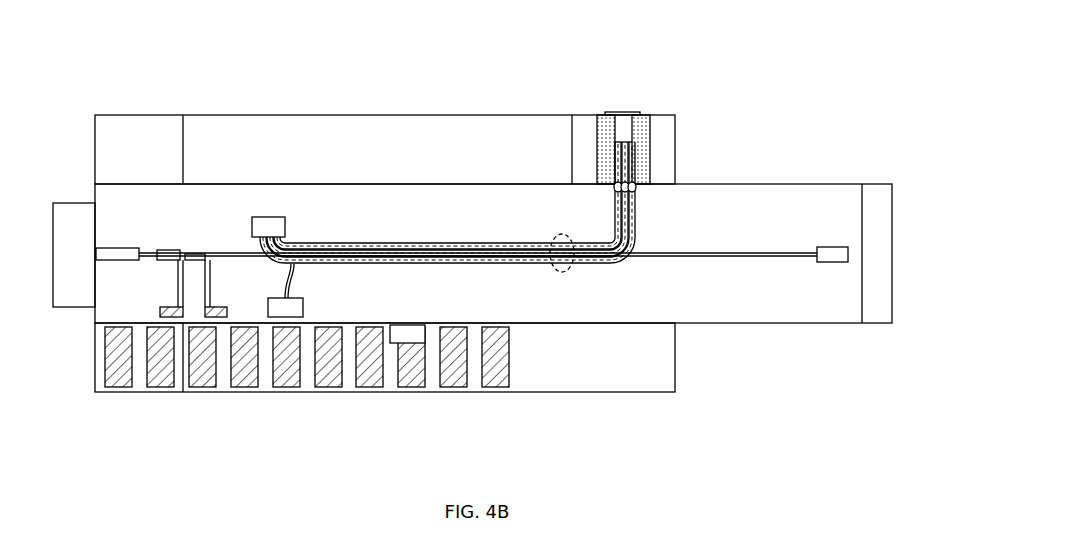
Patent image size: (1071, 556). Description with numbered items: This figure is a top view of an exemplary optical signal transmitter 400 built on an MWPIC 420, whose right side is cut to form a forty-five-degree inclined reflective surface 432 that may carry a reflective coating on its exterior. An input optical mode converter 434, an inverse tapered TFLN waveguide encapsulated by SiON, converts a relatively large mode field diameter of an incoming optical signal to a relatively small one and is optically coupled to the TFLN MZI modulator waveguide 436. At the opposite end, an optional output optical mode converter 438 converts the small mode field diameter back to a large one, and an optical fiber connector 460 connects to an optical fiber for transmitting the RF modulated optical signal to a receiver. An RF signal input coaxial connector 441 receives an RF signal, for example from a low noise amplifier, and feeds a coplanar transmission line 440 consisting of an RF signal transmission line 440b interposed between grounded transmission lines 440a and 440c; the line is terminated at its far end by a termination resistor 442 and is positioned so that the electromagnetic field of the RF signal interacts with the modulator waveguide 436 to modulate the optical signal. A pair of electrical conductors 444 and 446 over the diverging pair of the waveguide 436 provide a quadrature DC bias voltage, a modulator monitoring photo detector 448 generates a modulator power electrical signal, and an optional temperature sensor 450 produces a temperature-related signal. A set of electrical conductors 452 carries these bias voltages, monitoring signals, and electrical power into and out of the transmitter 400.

The optical signal transmitter 400 is at (740, 55).
The MWPIC 420 is at (706, 180).
The 45-degree inclined reflective surface 432 is at (874, 297).
The input optical mode converter 434 is at (827, 245).
The TFLN MZI modulator waveguide 436 is at (740, 257).
The output optical mode converter 438 is at (118, 247).
The coplanar transmission line 440 is at (449, 222).
The grounded transmission line 440a is at (341, 243).
The RF signal transmission line 440b is at (421, 250).
The grounded transmission line 440c is at (503, 258).
The RF signal input coaxial connector 441 is at (600, 110).
The termination resistor 442 is at (250, 228).
The electrical conductor 444 is at (170, 305).
The electrical conductor 446 is at (218, 305).
The modulator monitoring photo detector 448 is at (304, 312).
The temperature sensor 450 is at (407, 325).
The set of electrical conductors 452 is at (507, 398).
The optical fiber connector 460 is at (85, 309).